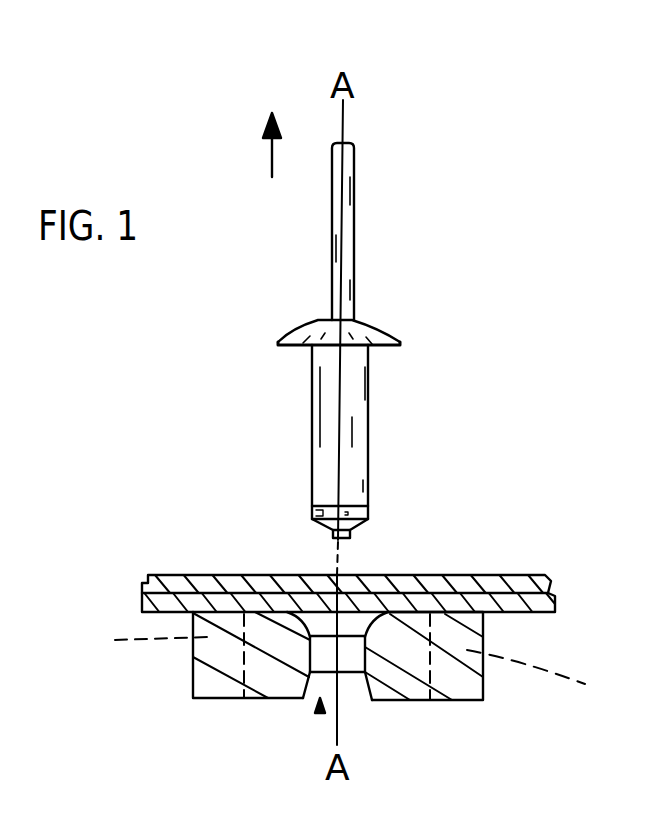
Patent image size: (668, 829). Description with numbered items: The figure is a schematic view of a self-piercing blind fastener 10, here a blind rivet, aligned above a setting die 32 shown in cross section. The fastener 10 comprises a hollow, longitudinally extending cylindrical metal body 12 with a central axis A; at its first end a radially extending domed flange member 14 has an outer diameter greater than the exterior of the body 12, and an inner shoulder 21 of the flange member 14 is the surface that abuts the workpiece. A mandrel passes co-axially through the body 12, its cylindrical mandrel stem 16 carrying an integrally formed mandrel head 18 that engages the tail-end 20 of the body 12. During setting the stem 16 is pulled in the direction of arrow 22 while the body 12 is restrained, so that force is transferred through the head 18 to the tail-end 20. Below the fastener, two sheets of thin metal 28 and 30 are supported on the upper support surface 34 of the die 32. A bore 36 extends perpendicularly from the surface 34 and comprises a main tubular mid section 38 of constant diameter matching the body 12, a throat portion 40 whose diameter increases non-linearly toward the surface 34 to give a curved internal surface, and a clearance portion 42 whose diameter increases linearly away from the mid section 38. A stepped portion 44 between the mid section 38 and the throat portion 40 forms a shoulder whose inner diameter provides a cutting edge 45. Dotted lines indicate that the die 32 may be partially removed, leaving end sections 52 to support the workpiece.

The self-piercing blind fastener 10 is at (418, 260).
The cylindrical metal body 12 is at (367, 395).
The domed flange member 14 is at (303, 331).
The mandrel stem 16 is at (347, 168).
The mandrel head 18 is at (370, 510).
The tail-end 20 is at (310, 527).
The inner shoulder 21 is at (387, 345).
The arrow 22 is at (260, 126).
The sheet of thin metal 28 is at (527, 578).
The sheet of thin metal 30 is at (555, 617).
The die 32 is at (483, 697).
The upper support surface 34 is at (432, 612).
The bore 36 is at (345, 688).
The main tubular mid section 38 is at (308, 657).
The throat portion 40 is at (360, 630).
The clearance portion 42 is at (320, 712).
The stepped portion 44 is at (290, 598).
The cutting edge 45 is at (403, 700).
The end sections 52 is at (350, 660).